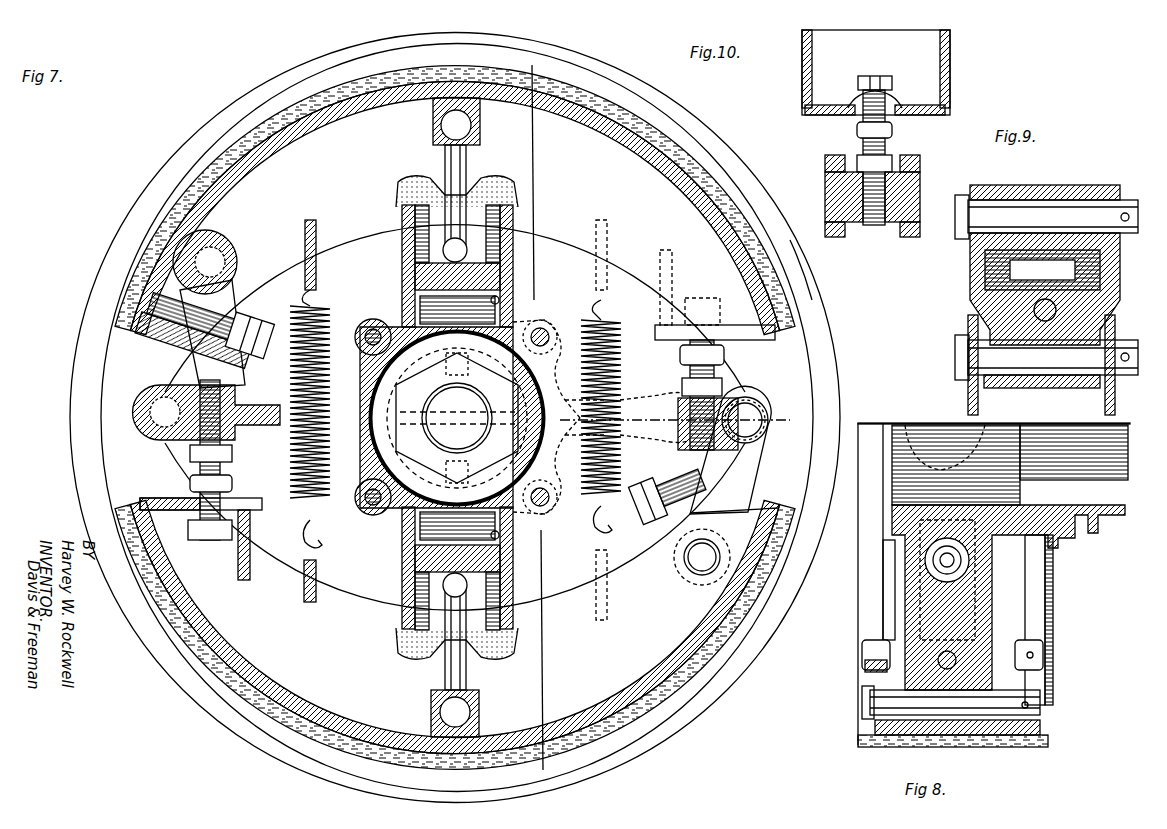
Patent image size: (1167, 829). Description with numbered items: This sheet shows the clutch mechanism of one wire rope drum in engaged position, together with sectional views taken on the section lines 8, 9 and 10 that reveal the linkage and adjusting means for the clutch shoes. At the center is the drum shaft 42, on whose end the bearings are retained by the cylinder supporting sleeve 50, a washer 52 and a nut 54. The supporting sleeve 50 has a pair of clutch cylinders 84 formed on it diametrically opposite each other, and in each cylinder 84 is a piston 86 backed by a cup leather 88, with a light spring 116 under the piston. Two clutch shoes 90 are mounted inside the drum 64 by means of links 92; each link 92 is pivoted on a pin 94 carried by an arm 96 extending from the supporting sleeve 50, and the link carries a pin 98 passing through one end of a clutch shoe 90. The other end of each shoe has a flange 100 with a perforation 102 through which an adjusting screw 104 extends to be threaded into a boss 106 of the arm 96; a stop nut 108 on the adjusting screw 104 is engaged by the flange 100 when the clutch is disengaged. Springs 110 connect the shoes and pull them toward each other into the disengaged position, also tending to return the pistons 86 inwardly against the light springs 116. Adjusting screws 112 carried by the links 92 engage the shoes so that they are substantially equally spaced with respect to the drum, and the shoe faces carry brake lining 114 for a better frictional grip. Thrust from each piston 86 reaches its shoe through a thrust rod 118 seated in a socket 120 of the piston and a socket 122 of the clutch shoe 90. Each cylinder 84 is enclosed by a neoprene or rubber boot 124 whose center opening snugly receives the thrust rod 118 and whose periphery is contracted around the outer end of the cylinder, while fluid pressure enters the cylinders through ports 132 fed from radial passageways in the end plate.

In FIG. 7, the section line 8— 8 is at (457, 414).
In FIG. 7, the section line 9— 9 is at (700, 500).
In FIG. 7, the section line 10— 10 is at (700, 330).
In FIG. 7, the drum shaft 42 is at (457, 418).
In FIG. 7, the cylinder supporting sleeve 50 is at (400, 330).
In FIG. 8, the cylinder supporting sleeve 50 is at (1088, 525).
In FIG. 7, the washer 52 is at (533, 395).
In FIG. 7, the nut 54 is at (533, 440).
In FIG. 7, the drum 64 is at (806, 276).
In FIG. 7, the clutch cylinder 84 is at (513, 268).
In FIG. 9, the clutch cylinder 84 is at (907, 393).
In FIG. 8, the clutch cylinder 84 is at (1003, 446).
In FIG. 7, the piston 86 is at (513, 240).
In FIG. 7, the cup leather 88 is at (402, 270).
In FIG. 7, the clutch shoe 90 is at (600, 132).
In FIG. 10, the clutch shoe 90 is at (808, 60).
In FIG. 9, the clutch shoe 90 is at (968, 394).
In FIG. 8, the clutch shoe 90 is at (940, 397).
In FIG. 7, the link 92 is at (160, 355).
In FIG. 9, the link 92 is at (975, 283).
In FIG. 8, the link 92 is at (890, 620).
In FIG. 7, the pin 94 is at (150, 425).
In FIG. 9, the pin 94 is at (973, 215).
In FIG. 8, the pin 94 is at (868, 710).
In FIG. 7, the arm 96 is at (292, 470).
In FIG. 10, the arm 96 is at (826, 163).
In FIG. 9, the arm 96 is at (1042, 319).
In FIG. 8, the arm 96 is at (1012, 635).
In FIG. 7, the pin 98 is at (222, 262).
In FIG. 9, the pin 98 is at (965, 358).
In FIG. 8, the pin 98 is at (870, 672).
In FIG. 7, the flange 100 is at (182, 510).
In FIG. 10, the flange 100 is at (915, 105).
In FIG. 7, the perforation 102 is at (208, 540).
In FIG. 10, the perforation 102 is at (890, 112).
In FIG. 7, the adjusting screw 104 is at (245, 545).
In FIG. 10, the adjusting screw 104 is at (892, 160).
In FIG. 7, the boss 106 is at (160, 390).
In FIG. 10, the boss 106 is at (912, 190).
In FIG. 9, the boss 106 is at (1048, 200).
In FIG. 8, the boss 106 is at (920, 718).
In FIG. 7, the stop nut 108 is at (190, 483).
In FIG. 10, the stop nut 108 is at (857, 130).
In FIG. 7, the spring 110 is at (395, 335).
In FIG. 8, the spring 110 is at (965, 568).
In FIG. 7, the adjusting screw 112 is at (250, 325).
In FIG. 9, the adjusting screw 112 is at (1034, 310).
In FIG. 7, the brake lining 114 is at (245, 712).
In FIG. 8, the brake lining 114 is at (1015, 752).
In FIG. 7, the light spring 116 is at (463, 333).
In FIG. 7, the thrust rod 118 is at (445, 162).
In FIG. 7, the socket 120 is at (518, 205).
In FIG. 7, the socket 122 is at (480, 125).
In FIG. 7, the boot 124 is at (488, 180).
In FIG. 7, the port 132 is at (500, 302).